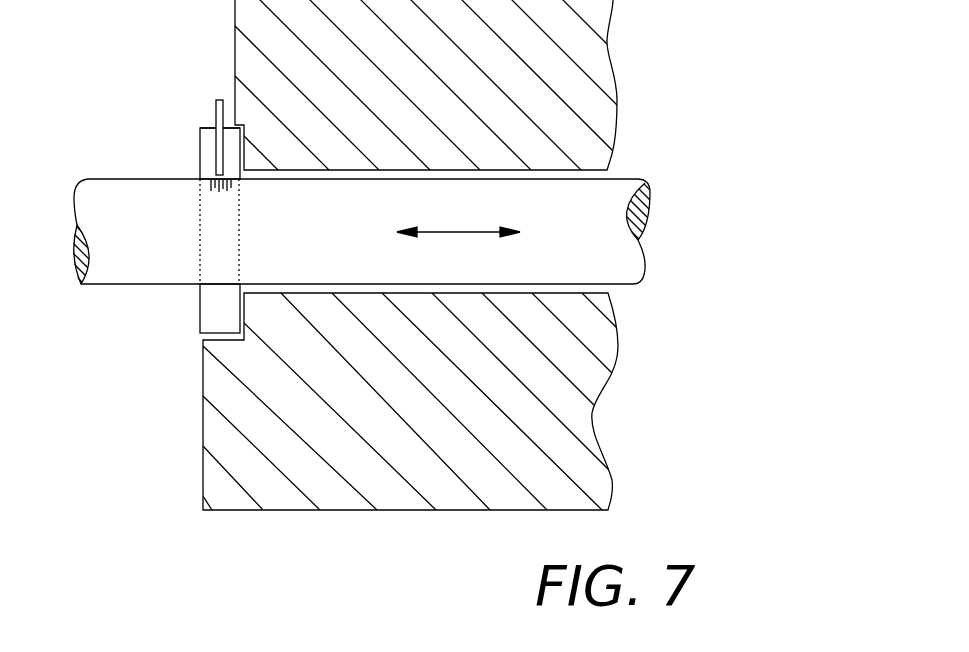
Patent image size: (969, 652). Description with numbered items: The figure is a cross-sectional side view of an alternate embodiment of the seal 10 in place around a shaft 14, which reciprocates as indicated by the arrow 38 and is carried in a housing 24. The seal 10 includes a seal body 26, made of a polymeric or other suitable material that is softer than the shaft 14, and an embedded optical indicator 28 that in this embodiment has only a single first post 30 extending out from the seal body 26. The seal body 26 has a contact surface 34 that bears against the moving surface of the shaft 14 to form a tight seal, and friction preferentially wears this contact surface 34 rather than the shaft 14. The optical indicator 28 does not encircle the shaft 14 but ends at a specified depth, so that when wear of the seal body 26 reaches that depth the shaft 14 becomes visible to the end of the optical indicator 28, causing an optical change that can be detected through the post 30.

The seal 10 is at (173, 318).
The shaft 14 is at (575, 212).
The housing 24 is at (385, 490).
The seal body 26 is at (200, 162).
The optical indicator 28 is at (200, 133).
The post 30 is at (219, 100).
The contact surface 34 is at (217, 283).
The arrow 38 is at (473, 232).